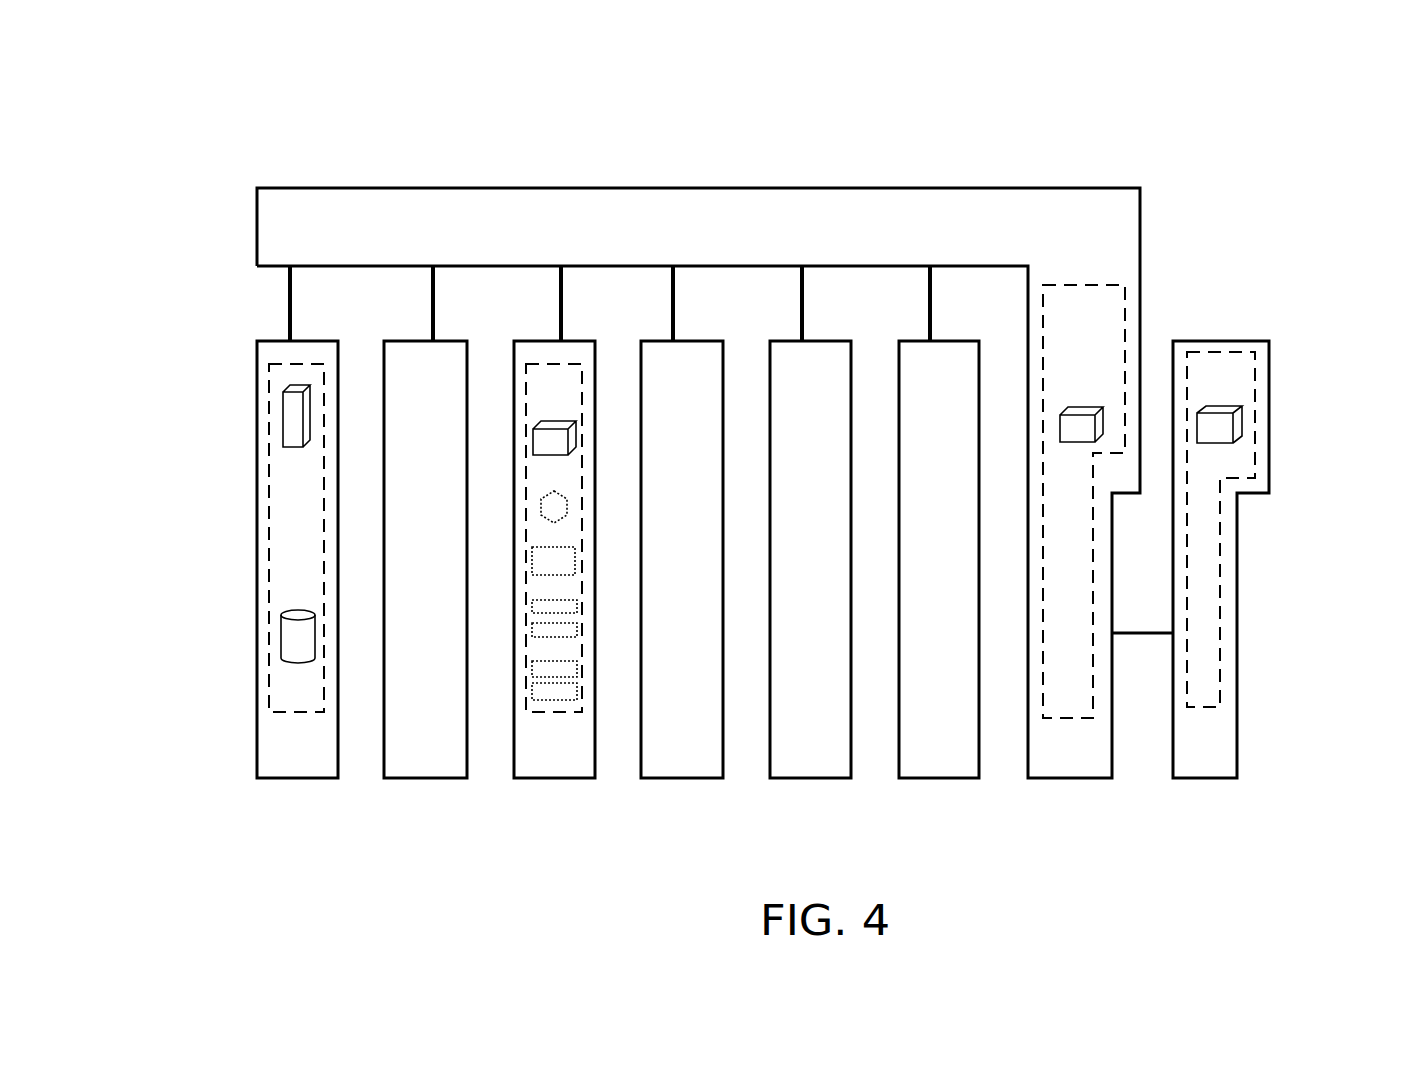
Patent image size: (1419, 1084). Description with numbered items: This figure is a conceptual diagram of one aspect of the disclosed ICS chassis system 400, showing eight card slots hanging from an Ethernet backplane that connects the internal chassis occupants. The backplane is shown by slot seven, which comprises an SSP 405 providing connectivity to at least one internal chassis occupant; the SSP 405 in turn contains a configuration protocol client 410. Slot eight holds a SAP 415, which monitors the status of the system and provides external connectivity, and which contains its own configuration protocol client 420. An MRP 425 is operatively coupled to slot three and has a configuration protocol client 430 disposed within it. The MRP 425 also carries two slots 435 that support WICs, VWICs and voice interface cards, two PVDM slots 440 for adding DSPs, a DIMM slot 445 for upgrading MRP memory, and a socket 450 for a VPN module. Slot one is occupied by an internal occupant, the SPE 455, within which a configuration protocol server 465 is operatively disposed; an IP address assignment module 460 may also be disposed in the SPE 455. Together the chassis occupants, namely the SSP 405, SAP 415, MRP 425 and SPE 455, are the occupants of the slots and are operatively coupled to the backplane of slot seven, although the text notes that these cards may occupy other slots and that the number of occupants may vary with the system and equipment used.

The system 400 is at (249, 128).
The SSP 405 is at (1052, 292).
The configuration protocol client 410 is at (1083, 400).
The SAP 415 is at (1224, 362).
The configuration protocol client 420 is at (1240, 423).
The MRP 425 is at (568, 713).
The configuration protocol client 430 is at (570, 438).
The slots 435 is at (543, 673).
The PVDM slots 440 is at (543, 612).
The DIMM slot 445 is at (539, 568).
The socket 450 is at (548, 517).
The SPE 455 is at (275, 697).
The IP address assignment module 460 is at (287, 645).
The configuration protocol server 465 is at (280, 418).